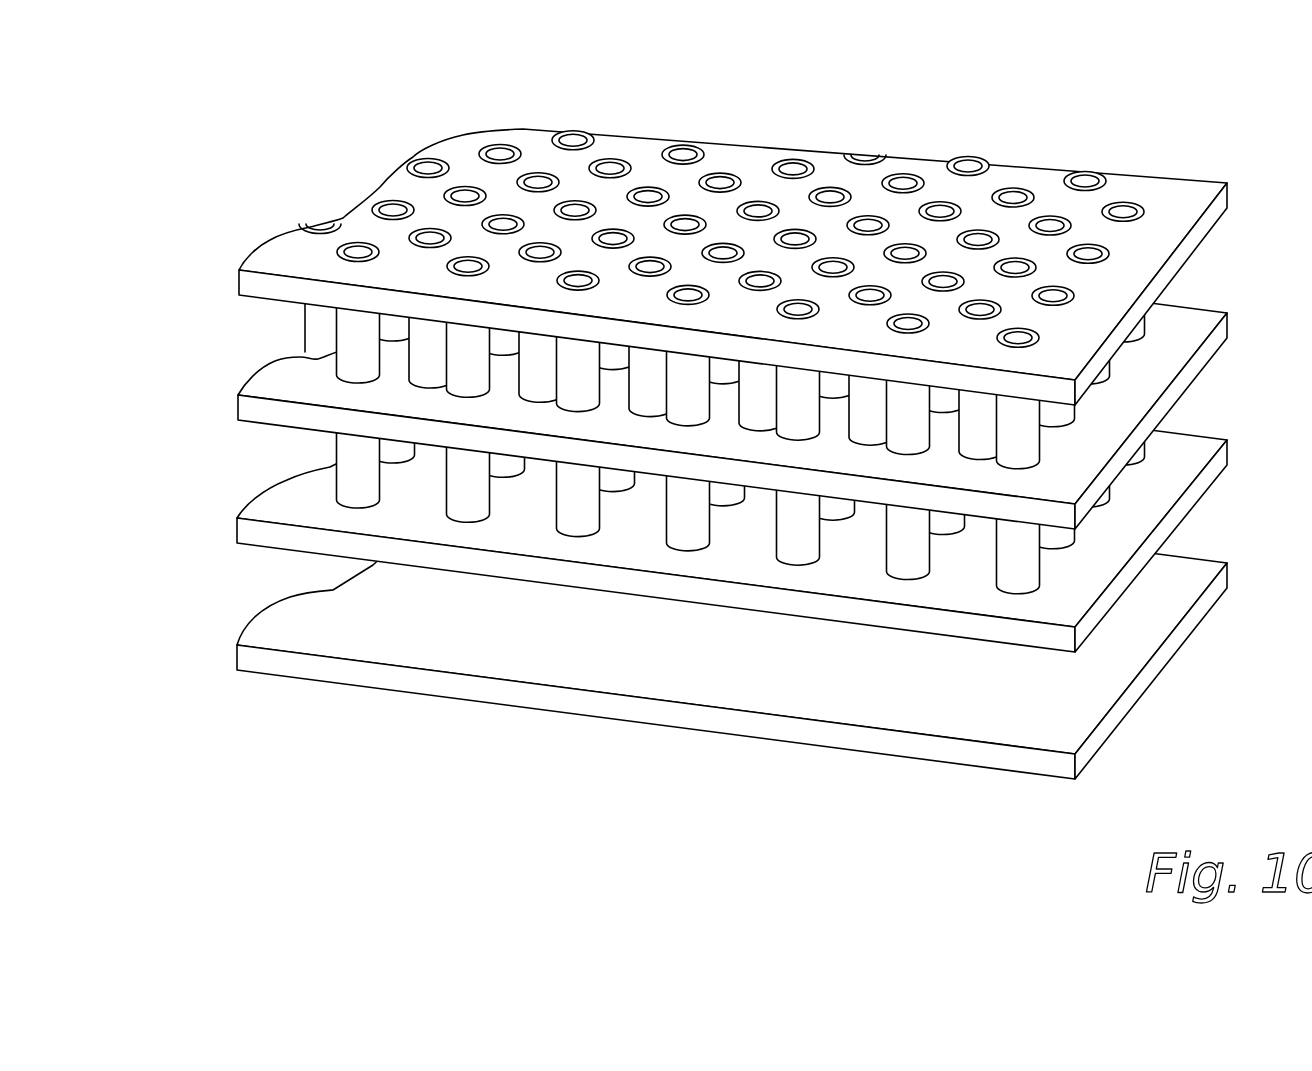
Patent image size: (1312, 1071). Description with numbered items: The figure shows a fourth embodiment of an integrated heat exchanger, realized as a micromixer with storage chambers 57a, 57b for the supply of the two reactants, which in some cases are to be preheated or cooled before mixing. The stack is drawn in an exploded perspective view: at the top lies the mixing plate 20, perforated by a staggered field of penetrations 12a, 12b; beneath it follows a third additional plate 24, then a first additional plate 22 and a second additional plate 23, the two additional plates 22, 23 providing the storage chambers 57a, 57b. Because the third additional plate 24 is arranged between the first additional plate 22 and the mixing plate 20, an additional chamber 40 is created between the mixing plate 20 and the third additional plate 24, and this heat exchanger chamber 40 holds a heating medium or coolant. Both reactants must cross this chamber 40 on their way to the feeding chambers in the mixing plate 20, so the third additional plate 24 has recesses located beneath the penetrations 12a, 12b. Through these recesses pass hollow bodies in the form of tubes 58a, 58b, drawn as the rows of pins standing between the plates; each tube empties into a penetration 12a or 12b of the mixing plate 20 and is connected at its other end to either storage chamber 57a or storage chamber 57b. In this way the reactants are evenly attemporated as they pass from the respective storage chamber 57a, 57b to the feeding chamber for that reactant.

The mixing plate 20 is at (1172, 187).
The third additional plate 24 is at (1197, 310).
The first additional plate 22 is at (1205, 442).
The second additional plate 23 is at (1200, 565).
The penetrations of the mixing plate 12a is at (967, 165).
The penetrations of the mixing plate 12b is at (1117, 207).
The heat exchanger chamber 40 is at (236, 338).
The storage chamber 57a is at (250, 472).
The storage chamber 57b is at (246, 605).
The tubes 58a is at (750, 397).
The tubes 58b is at (677, 410).